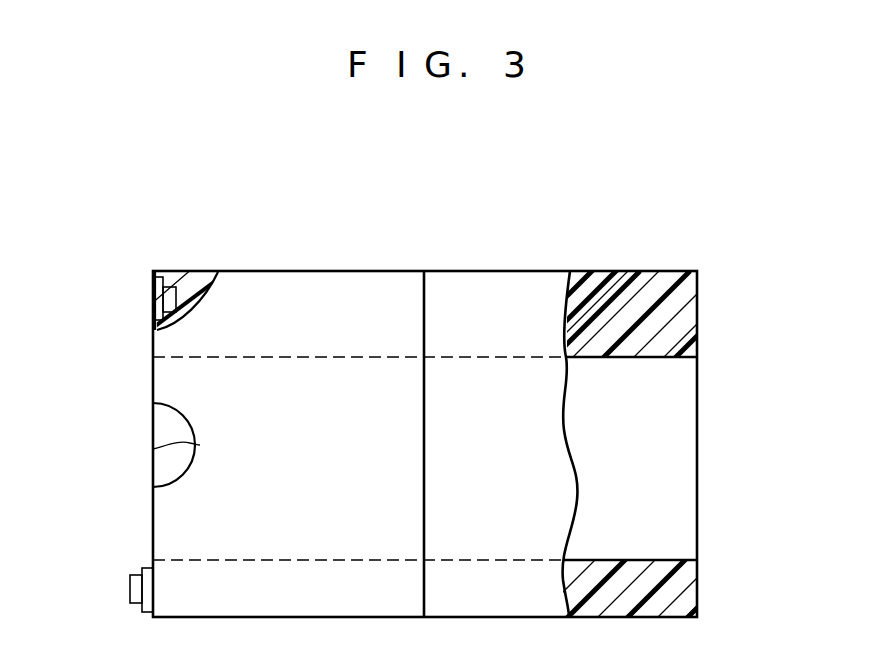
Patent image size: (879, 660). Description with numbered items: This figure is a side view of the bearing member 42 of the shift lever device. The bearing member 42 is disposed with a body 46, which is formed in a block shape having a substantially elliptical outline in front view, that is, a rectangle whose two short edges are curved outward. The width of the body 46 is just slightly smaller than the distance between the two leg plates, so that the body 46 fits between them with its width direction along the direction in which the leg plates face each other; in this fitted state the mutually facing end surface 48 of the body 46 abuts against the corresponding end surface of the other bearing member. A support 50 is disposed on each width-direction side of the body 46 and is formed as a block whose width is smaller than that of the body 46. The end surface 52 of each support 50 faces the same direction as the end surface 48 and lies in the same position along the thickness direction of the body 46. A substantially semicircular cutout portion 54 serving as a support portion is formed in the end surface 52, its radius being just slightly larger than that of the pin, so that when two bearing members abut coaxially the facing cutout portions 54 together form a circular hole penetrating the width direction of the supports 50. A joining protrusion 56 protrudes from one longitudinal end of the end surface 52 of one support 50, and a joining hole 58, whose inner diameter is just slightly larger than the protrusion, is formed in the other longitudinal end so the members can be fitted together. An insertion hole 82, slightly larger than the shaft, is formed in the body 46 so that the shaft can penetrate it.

The bearing member 42 is at (497, 213).
The body 46 is at (630, 271).
The end surface 48 is at (153, 420).
The support 50 is at (424, 310).
The end surface 52 is at (153, 517).
The cutout portion 54 is at (153, 449).
The joining protrusion 56 is at (130, 592).
The joining hole 58 is at (153, 300).
The insertion hole 82 is at (650, 358).